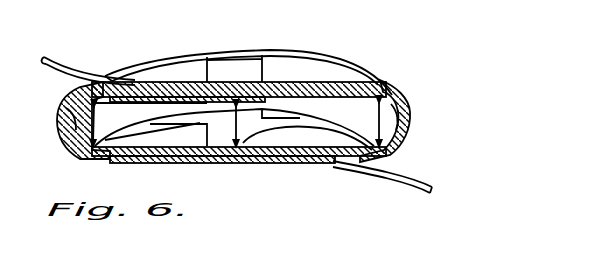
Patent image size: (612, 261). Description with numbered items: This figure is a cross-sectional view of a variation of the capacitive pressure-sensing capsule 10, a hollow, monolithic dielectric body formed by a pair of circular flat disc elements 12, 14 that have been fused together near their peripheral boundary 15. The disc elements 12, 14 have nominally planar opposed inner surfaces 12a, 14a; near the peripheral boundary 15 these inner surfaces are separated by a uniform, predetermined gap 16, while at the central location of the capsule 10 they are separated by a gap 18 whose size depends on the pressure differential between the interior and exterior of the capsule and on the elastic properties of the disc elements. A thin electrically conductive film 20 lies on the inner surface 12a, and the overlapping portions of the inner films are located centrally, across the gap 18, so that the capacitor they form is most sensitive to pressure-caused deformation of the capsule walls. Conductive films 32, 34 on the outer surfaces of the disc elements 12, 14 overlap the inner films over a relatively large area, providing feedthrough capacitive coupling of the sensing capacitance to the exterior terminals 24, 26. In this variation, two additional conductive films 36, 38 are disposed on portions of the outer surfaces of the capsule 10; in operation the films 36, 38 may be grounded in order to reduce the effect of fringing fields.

The dielectric capsule 10 is at (357, 52).
The disc element 12 is at (226, 71).
The inner surface 12a is at (302, 98).
The disc element 14 is at (205, 158).
The inner surface 14a is at (243, 164).
The peripheral boundary 15 is at (57, 128).
The gap 16 is at (78, 138).
The gap 18 is at (239, 122).
The conductive film 20 is at (177, 81).
The exterior terminal 24 is at (62, 67).
The exterior terminal 26 is at (388, 170).
The conductive film 32 is at (147, 75).
The conductive film 34 is at (282, 163).
The additional conductive film 36 is at (290, 65).
The additional conductive film 38 is at (166, 165).